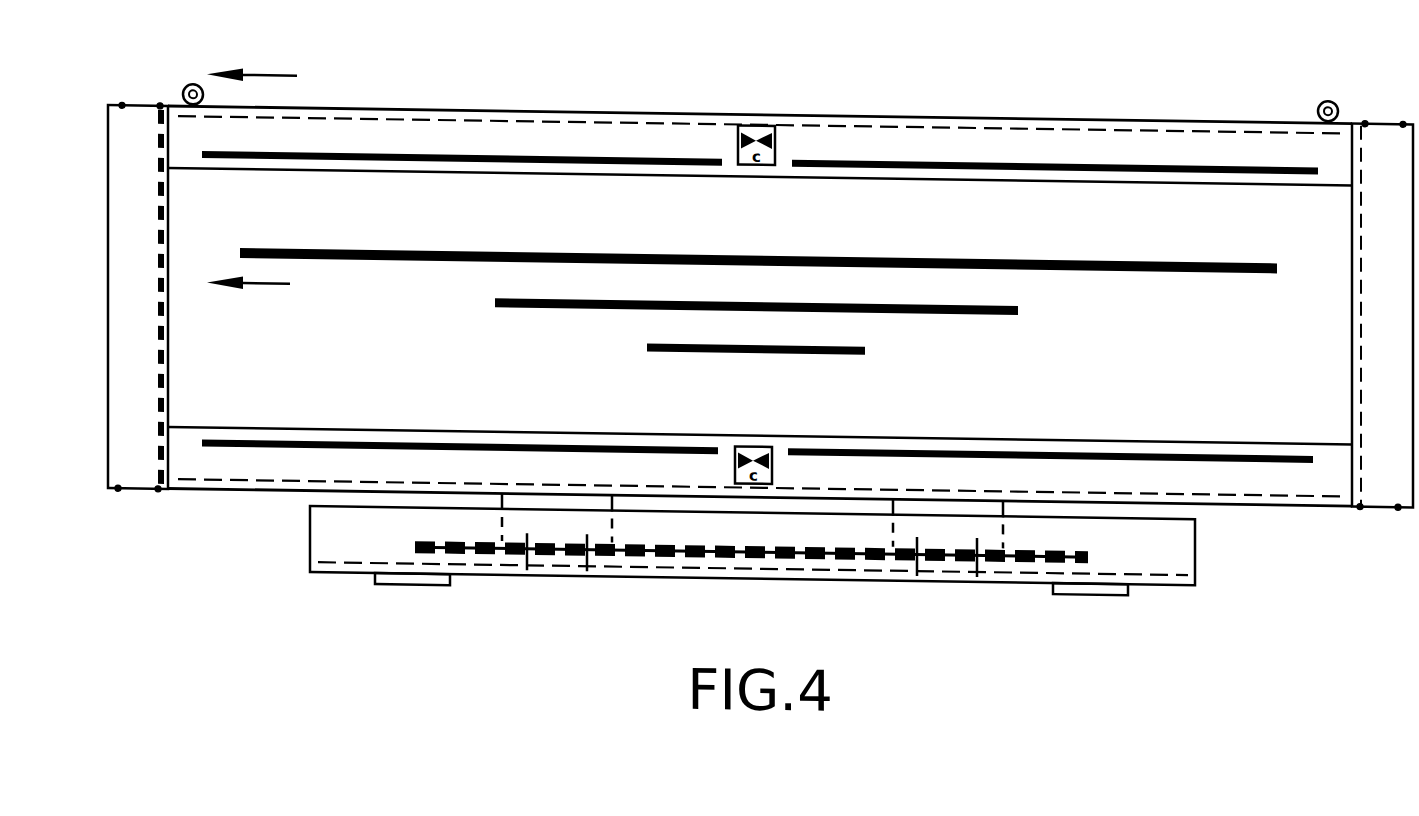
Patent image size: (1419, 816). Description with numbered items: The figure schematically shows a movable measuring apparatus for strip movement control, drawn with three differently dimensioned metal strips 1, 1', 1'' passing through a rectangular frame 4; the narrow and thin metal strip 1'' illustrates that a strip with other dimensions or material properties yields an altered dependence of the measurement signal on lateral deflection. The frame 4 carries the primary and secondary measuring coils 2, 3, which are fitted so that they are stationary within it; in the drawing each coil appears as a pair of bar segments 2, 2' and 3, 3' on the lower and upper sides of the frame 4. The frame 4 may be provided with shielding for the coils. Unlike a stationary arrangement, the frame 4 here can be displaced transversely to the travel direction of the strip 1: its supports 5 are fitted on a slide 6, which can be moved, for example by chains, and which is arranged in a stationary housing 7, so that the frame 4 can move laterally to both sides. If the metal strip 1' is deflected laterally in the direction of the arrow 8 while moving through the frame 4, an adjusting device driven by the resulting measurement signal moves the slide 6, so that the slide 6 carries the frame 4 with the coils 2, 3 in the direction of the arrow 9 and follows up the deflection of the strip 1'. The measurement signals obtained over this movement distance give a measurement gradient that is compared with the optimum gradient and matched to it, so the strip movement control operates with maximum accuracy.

The metal strip 1 is at (756, 342).
The metal strip 1' is at (758, 221).
The metal strip 1'' is at (756, 382).
The coil 2 is at (1050, 511).
The lower guide bar 2' is at (460, 504).
The coil 3 is at (1055, 109).
The upper guide bar 3' is at (462, 100).
The frame 4 is at (680, 128).
The supports 5 is at (506, 500).
The slide 6 is at (600, 566).
The stationary housing 7 is at (318, 546).
The arrow 8 is at (262, 283).
The arrow 9 is at (268, 73).